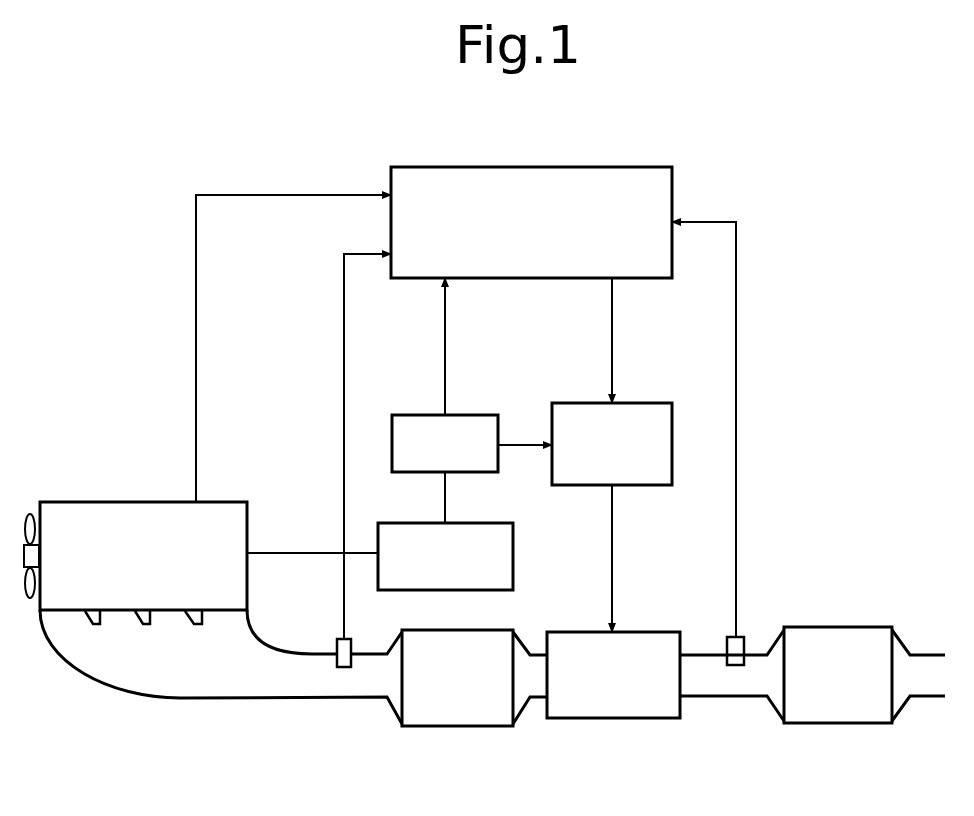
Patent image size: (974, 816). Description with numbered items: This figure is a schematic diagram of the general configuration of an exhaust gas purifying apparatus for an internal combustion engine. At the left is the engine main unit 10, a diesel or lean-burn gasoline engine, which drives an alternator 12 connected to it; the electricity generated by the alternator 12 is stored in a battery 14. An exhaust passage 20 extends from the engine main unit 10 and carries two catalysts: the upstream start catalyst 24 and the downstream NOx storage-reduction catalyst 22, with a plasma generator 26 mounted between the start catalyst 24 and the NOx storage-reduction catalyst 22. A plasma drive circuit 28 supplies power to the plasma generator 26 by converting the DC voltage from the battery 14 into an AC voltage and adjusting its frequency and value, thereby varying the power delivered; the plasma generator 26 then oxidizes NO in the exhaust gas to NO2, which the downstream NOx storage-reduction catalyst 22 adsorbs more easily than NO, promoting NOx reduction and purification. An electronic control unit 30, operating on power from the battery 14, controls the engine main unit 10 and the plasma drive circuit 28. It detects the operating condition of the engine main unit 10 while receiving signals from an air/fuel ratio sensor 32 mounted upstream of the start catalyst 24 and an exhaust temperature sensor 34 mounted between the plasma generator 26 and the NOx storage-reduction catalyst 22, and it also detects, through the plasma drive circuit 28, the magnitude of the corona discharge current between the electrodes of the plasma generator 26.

The engine main unit 10 is at (82, 502).
The alternator 12 is at (513, 556).
The battery 14 is at (402, 415).
The exhaust pipe 20 is at (200, 698).
The NOx storage-reduction catalyst 22 is at (876, 723).
The start catalyst 24 is at (490, 727).
The plasma generator 26 is at (658, 718).
The plasma drive circuit 28 is at (650, 403).
The electronic control unit 30 is at (646, 167).
The air/fuel ratio sensor 32 is at (337, 645).
The exhaust temperature sensor 34 is at (746, 640).